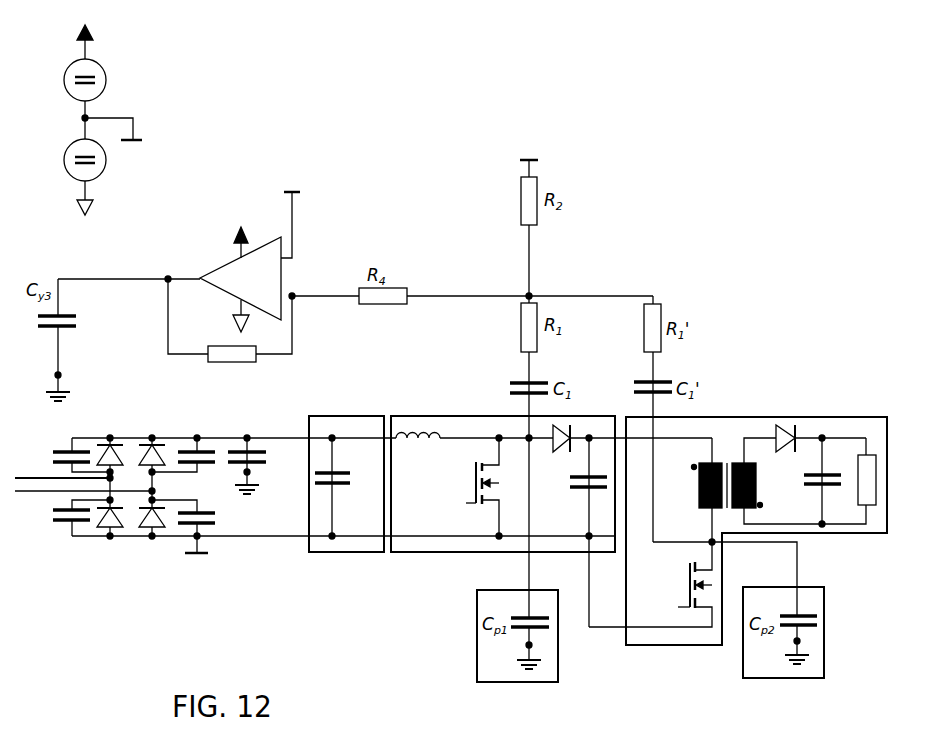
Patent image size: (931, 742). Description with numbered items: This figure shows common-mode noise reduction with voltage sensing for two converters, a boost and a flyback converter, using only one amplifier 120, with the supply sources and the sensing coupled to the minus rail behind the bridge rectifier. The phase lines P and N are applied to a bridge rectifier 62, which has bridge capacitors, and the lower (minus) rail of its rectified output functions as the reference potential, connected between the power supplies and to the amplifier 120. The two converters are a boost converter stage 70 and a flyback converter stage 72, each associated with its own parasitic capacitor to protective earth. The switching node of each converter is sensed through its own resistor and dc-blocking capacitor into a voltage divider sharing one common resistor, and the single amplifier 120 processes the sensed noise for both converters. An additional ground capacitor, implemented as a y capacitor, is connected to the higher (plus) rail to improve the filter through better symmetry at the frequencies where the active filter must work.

The amplifier 120 is at (250, 208).
The bridge rectifier 62 is at (137, 402).
The boost converter stage 70 is at (428, 552).
The flyback converter stage 72 is at (745, 417).